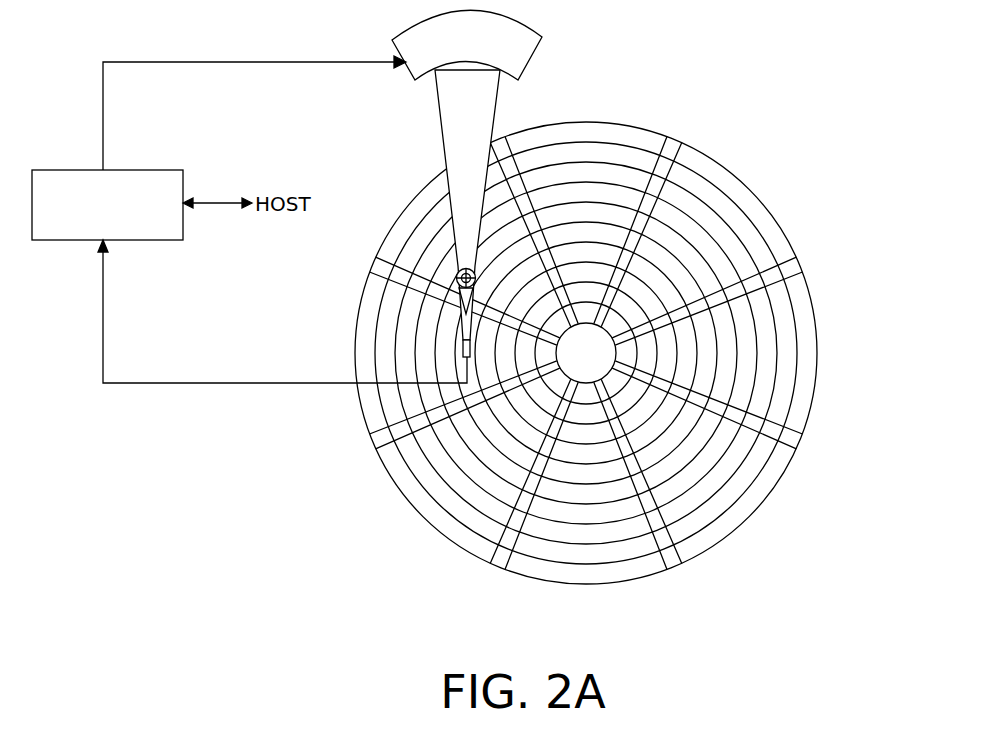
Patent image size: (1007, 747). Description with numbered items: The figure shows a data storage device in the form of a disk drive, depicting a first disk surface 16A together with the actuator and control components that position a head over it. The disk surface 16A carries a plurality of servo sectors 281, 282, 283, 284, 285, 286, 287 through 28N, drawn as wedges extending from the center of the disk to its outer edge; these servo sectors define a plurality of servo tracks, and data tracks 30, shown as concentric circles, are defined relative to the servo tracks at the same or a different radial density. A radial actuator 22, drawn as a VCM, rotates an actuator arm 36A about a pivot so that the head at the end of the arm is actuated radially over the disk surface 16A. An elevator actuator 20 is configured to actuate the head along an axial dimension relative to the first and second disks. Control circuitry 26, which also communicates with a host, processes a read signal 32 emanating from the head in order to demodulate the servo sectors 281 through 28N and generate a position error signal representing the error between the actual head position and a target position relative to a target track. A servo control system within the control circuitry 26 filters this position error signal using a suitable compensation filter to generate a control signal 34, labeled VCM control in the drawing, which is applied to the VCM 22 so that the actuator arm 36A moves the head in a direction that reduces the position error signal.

The first disk surface 16A is at (743, 175).
The elevator actuator 20 is at (459, 347).
The radial actuator 22 is at (413, 80).
The control circuitry 26 is at (163, 242).
The servo sector 281 is at (677, 145).
The servo sector 282 is at (796, 269).
The servo sector 283 is at (796, 445).
The servo sector 284 is at (668, 568).
The servo sector 285 is at (497, 563).
The servo sector 286 is at (373, 436).
The servo sector 287 is at (377, 263).
The servo sector 28N is at (503, 144).
The data tracks 30 is at (587, 133).
The read signal 32 is at (197, 385).
The control signal 34 is at (104, 108).
The actuator arm 36A is at (448, 154).